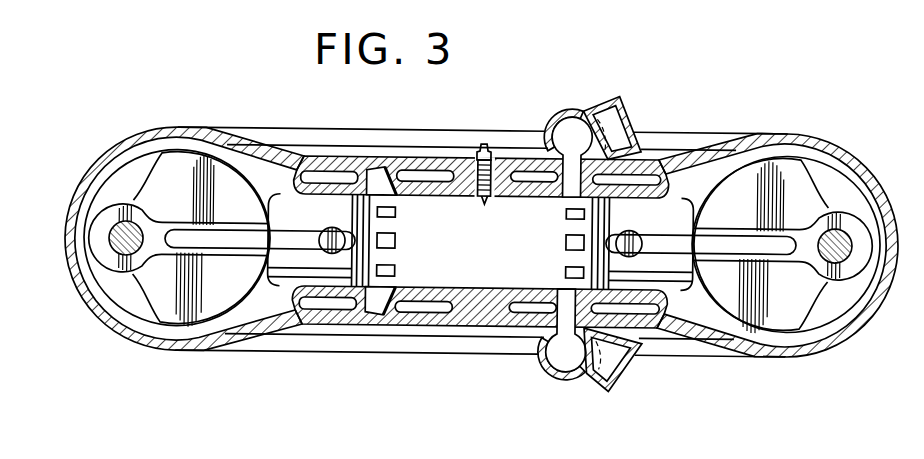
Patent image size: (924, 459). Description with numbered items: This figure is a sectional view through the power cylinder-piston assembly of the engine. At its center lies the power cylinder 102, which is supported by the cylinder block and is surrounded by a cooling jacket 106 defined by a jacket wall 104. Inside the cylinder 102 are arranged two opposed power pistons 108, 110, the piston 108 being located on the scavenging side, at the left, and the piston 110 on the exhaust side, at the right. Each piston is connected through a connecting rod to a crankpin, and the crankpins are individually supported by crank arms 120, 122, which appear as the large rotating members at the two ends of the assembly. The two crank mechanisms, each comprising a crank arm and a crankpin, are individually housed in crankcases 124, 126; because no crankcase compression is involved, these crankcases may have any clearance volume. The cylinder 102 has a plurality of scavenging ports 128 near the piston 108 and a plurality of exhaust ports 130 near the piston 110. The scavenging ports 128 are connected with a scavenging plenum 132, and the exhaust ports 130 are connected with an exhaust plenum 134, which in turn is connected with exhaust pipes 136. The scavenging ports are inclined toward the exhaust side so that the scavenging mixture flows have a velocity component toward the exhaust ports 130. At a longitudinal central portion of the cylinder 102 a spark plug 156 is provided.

The power cylinder 102 is at (458, 294).
The jacket wall 104 is at (484, 333).
The cooling jacket 106 is at (434, 312).
The power piston 108 is at (373, 259).
The power piston 110 is at (590, 257).
The crank arm 120 is at (162, 176).
The crank arm 122 is at (743, 244).
The crankcase 124 is at (118, 311).
The crankcase 126 is at (809, 168).
The scavenging ports 128 is at (397, 246).
The exhaust ports 130 is at (560, 239).
The scavenging plenum 132 is at (353, 315).
The exhaust plenum 134 is at (562, 129).
The exhaust pipes 136 is at (621, 113).
The spark plug 156 is at (482, 203).